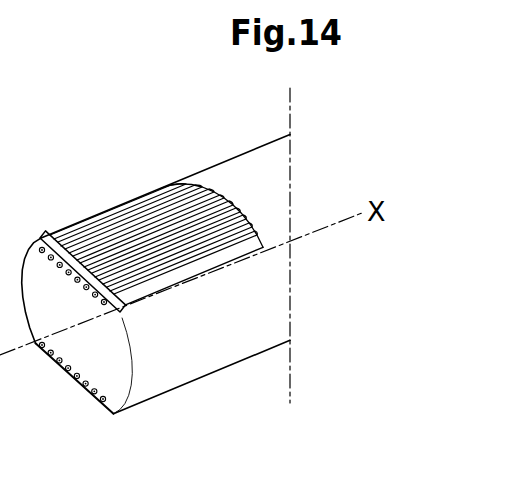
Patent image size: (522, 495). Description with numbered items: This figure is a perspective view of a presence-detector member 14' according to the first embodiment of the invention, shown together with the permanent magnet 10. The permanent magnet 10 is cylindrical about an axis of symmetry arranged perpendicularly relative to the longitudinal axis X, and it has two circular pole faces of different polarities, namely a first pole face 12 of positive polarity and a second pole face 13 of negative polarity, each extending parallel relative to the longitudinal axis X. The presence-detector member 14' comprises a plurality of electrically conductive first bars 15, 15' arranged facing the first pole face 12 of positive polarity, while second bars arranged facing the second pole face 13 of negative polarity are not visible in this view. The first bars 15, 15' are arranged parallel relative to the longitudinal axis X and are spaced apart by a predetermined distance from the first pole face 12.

The permanent magnet 10 is at (203, 263).
The first pole face 12 is at (192, 283).
The second pole face 13 is at (197, 378).
The presence-detector member 14' is at (67, 266).
The first bar 15 is at (172, 194).
The first bar 15' is at (141, 191).